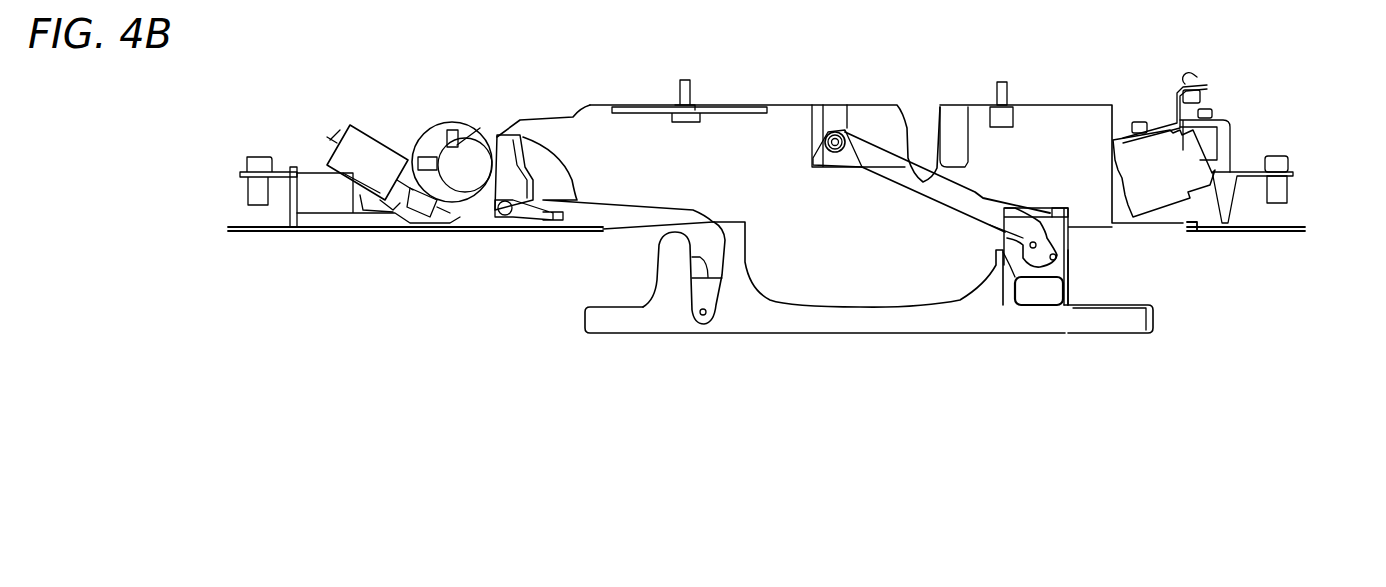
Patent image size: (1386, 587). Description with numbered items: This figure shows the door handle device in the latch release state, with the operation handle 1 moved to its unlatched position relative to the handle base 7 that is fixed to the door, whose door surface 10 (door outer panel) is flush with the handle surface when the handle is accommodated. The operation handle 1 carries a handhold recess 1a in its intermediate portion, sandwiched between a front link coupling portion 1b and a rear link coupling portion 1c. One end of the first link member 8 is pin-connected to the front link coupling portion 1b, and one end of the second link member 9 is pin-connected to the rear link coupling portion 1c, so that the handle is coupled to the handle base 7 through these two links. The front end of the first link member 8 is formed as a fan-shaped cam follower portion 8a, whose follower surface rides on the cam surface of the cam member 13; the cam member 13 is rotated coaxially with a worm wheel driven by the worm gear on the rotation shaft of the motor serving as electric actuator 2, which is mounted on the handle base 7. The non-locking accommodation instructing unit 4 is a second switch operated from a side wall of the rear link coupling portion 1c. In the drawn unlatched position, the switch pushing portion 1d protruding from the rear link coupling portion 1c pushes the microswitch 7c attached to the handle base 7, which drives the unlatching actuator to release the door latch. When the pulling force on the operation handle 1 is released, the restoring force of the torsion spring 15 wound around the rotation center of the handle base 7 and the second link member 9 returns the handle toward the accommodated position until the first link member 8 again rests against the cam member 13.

The operation handle 1 is at (928, 334).
The handhold recess 1a is at (862, 311).
The front link coupling portion 1b is at (670, 256).
The rear link coupling portion 1c is at (1060, 268).
The switch pushing portion 1d is at (1040, 213).
The electric actuator 2 is at (380, 150).
The non-locking accommodation instructing unit 4 is at (1038, 298).
The handle base 7 is at (1037, 118).
The microswitch 7c is at (1075, 215).
The first link member 8 is at (605, 213).
The cam follower portion 8a is at (517, 153).
The second link member 9 is at (875, 155).
The door surface 10 is at (1240, 228).
The cam member 13 is at (465, 178).
The torsion spring 15 is at (813, 158).